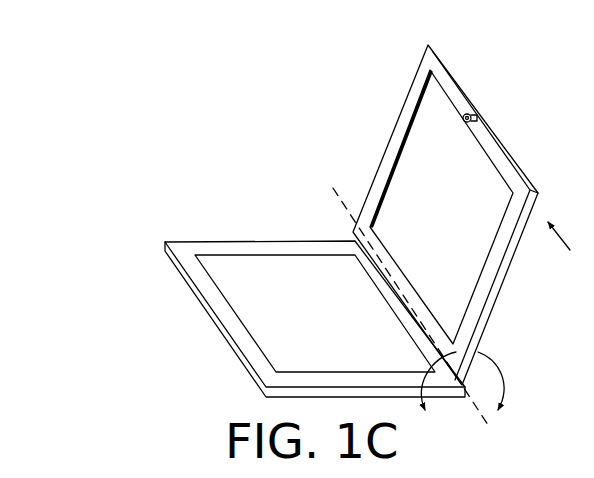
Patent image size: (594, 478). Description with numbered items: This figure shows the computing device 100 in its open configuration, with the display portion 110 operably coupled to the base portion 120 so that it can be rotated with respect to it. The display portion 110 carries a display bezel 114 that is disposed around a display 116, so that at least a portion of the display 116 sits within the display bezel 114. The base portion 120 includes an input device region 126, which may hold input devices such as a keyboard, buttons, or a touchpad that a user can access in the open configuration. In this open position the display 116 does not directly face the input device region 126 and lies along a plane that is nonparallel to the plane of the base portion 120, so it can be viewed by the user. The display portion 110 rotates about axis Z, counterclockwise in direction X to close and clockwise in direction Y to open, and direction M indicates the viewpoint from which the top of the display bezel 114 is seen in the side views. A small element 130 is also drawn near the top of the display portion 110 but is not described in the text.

The computing device 100 is at (325, 92).
The display portion 110 is at (529, 187).
The display bezel 114 is at (428, 69).
The display 116 is at (413, 158).
The base portion 120 is at (258, 248).
The input device region 126 is at (310, 277).
The camera 130 is at (472, 110).